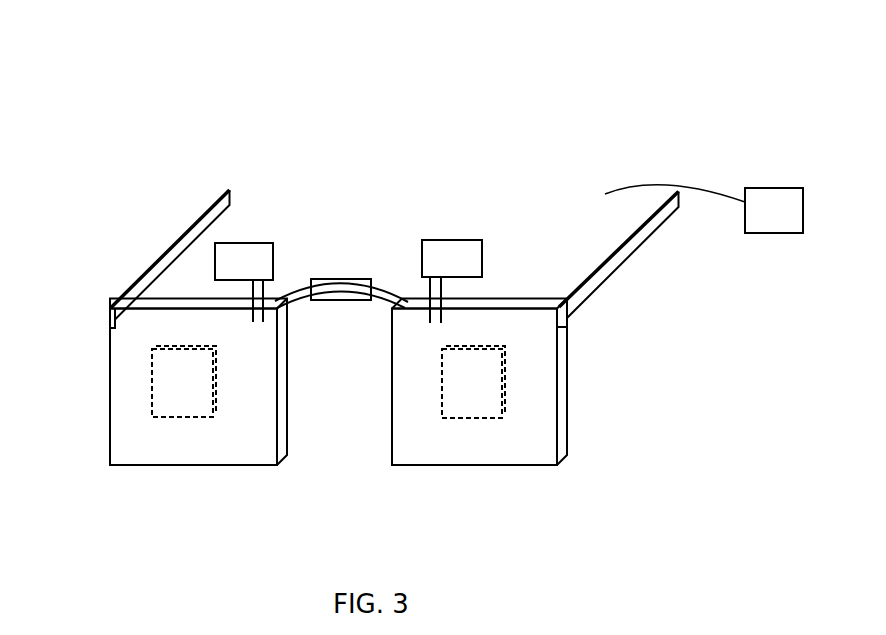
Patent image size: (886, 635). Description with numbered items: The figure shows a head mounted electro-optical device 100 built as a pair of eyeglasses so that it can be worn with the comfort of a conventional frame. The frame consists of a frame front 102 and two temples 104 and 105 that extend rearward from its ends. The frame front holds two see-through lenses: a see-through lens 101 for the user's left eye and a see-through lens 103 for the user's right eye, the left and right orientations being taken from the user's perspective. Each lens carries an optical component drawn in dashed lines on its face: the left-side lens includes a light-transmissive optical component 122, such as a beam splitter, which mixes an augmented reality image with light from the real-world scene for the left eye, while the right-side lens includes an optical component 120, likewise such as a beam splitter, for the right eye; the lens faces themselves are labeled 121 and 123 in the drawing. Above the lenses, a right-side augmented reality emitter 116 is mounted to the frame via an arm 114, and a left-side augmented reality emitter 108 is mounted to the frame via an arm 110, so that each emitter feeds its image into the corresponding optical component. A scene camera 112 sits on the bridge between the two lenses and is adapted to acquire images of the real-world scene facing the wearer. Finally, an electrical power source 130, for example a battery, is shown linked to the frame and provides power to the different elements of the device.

The eyewear system 100 is at (569, 133).
The see-through lens 101 is at (544, 428).
The frame front 102 is at (565, 417).
The see-through lens 103 is at (187, 419).
The temple 104 is at (648, 236).
The temple 105 is at (172, 252).
The left-side augmented reality emitter 108 is at (463, 250).
The arm 110 is at (443, 291).
The scene camera 112 is at (341, 300).
The arm 114 is at (273, 298).
The right-side augmented reality emitter 116 is at (242, 250).
The optical component 120 is at (178, 418).
The left front face 121 is at (145, 400).
The light-transmissive optical component 122 is at (502, 382).
The right front face 123 is at (433, 394).
The electrical power source 130 is at (773, 215).